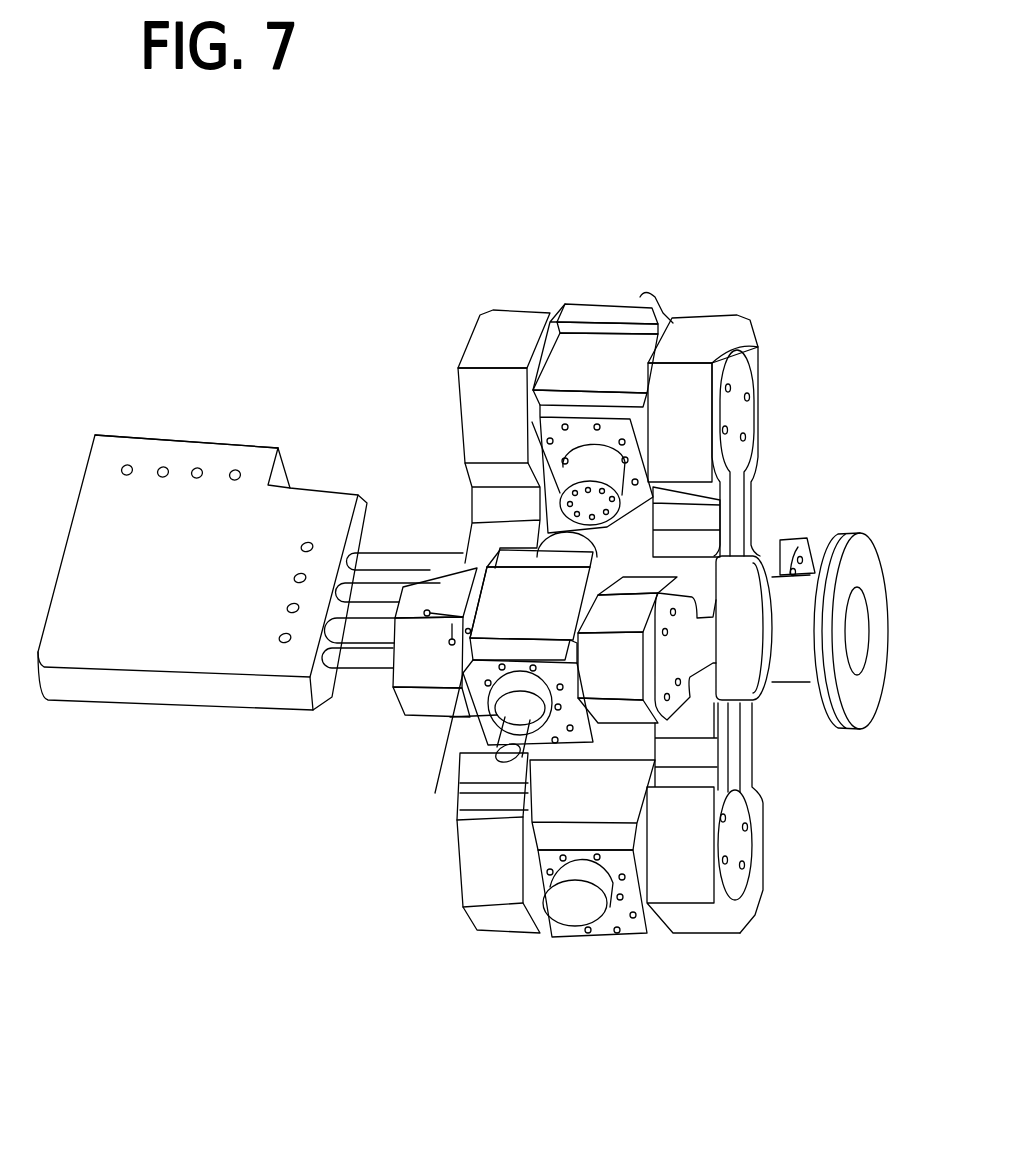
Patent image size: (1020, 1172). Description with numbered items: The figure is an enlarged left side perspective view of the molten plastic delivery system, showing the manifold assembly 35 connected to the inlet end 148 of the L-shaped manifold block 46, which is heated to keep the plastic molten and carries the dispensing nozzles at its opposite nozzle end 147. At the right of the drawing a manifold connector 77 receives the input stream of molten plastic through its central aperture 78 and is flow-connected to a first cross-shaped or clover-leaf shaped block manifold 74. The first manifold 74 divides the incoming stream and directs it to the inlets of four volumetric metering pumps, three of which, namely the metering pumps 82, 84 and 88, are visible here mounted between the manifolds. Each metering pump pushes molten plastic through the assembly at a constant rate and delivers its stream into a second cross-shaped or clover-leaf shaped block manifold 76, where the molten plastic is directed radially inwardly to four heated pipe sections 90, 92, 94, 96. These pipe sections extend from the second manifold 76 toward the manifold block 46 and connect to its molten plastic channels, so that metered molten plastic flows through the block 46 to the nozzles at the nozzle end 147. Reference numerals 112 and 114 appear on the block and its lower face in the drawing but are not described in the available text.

The manifold assembly 35 is at (553, 282).
The manifold block 46 is at (176, 462).
The first block manifold 74 is at (693, 405).
The second block manifold 76 is at (478, 412).
The manifold connector 77 is at (830, 690).
The central aperture 78 is at (857, 623).
The volumetric metering pump 82 is at (610, 317).
The volumetric metering pump 84 is at (505, 612).
The volumetric metering pump 88 is at (632, 800).
The heated pipe section 90 is at (357, 657).
The heated pipe section 92 is at (375, 626).
The heated pipe section 94 is at (371, 598).
The heated pipe section 96 is at (421, 567).
The mounting plate 112 is at (198, 571).
The plate front face 114 is at (107, 686).
The nozzle end 147 is at (133, 435).
The inlet end 148 is at (322, 706).